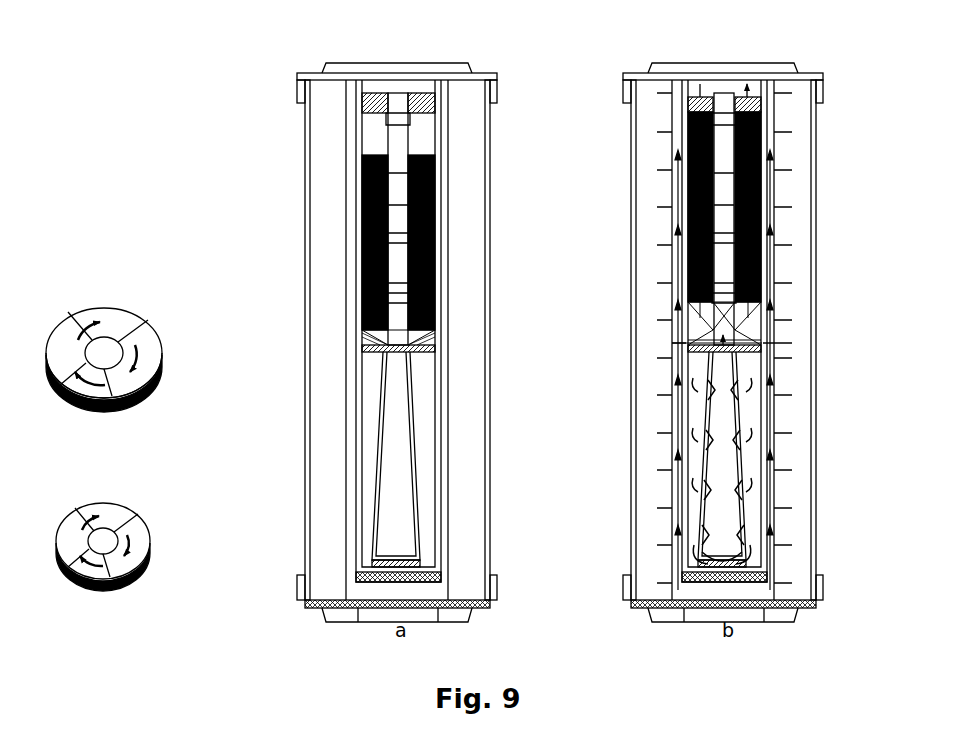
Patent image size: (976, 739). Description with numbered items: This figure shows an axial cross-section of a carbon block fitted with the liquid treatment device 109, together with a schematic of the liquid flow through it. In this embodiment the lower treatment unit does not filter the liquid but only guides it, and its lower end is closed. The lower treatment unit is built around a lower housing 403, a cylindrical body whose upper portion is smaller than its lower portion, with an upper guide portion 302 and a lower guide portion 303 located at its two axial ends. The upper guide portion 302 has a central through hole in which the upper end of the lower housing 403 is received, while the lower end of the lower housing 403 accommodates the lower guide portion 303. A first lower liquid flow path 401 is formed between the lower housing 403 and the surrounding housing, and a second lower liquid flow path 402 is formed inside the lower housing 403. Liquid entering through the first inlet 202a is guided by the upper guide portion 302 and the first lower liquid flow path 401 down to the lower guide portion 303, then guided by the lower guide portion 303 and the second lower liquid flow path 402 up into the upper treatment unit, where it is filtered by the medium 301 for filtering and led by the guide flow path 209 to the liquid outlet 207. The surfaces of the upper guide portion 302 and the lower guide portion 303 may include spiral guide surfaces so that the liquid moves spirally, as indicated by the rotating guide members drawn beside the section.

The liquid treatment device 109 is at (355, 463).
The first inlet 202a is at (683, 343).
The liquid outlet 207 is at (390, 90).
The guide flow path 209 is at (395, 243).
The medium for filtering 301 is at (375, 287).
The upper guide portion 302 is at (375, 350).
The lower guide portion 303 is at (380, 560).
The first lower liquid flow path 401 is at (749, 398).
The second lower liquid flow path 402 is at (728, 480).
The lower housing 403 is at (748, 535).